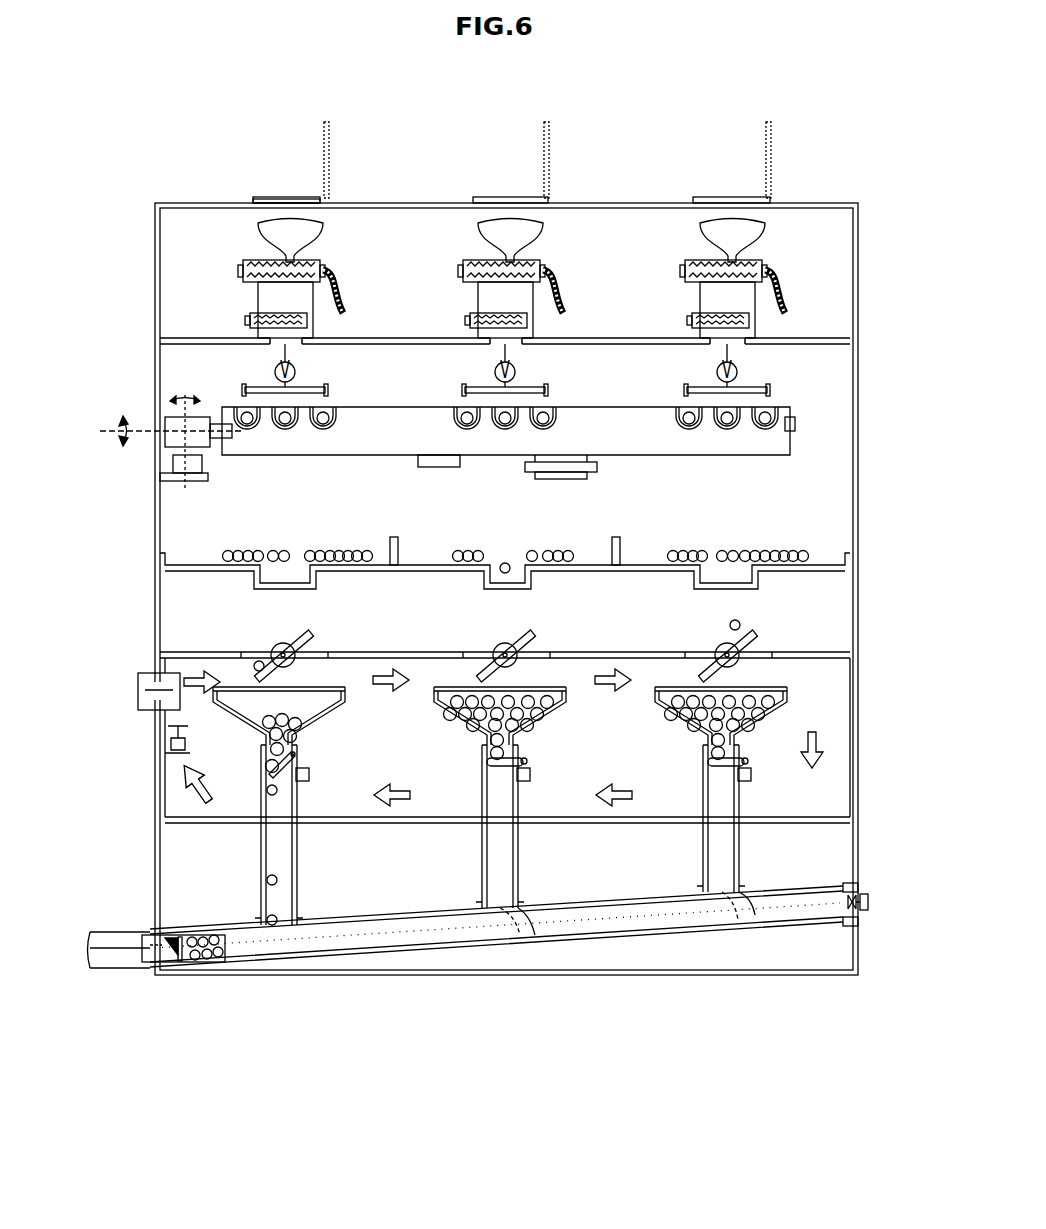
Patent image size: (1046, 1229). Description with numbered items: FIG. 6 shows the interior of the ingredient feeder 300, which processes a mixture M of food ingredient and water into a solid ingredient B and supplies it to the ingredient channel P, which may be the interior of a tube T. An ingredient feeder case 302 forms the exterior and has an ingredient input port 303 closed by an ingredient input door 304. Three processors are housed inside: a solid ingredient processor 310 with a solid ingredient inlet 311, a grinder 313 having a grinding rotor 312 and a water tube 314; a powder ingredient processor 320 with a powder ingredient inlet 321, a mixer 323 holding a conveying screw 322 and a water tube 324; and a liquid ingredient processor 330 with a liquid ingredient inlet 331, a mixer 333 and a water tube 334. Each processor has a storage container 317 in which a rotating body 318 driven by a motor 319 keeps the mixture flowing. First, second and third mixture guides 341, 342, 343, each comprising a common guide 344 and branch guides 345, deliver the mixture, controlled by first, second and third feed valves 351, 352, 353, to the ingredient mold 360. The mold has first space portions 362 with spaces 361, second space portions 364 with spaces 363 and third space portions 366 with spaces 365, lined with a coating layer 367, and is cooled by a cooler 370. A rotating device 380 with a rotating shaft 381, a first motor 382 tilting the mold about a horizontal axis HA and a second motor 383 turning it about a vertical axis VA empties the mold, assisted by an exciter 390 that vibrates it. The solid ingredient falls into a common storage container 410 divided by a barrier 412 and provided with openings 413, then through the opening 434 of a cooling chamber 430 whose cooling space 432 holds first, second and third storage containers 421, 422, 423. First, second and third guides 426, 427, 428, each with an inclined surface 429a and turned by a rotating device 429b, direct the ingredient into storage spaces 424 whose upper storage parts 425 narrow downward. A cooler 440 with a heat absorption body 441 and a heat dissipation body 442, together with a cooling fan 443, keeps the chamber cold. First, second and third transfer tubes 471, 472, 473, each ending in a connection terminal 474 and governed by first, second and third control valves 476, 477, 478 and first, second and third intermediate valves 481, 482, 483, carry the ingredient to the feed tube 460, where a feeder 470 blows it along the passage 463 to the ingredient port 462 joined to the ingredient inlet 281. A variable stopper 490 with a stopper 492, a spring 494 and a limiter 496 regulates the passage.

The ingredient feeder 300 is at (136, 192).
The ingredient feeder case 302 is at (258, 300).
The ingredient input port 303 is at (304, 199).
The ingredient input door 304 is at (283, 197).
The solid ingredient processor 310 is at (488, 211).
The solid ingredient inlet 311 is at (274, 230).
The grinding rotor 312 is at (258, 266).
The grinder 313 is at (268, 295).
The water tube 314 is at (329, 197).
The storage container 317 is at (260, 290).
The rotating body 318 is at (252, 320).
The motor 319 is at (262, 325).
The powder ingredient processor 320 is at (514, 212).
The powder ingredient inlet 321 is at (497, 232).
The conveying screw 322 is at (485, 300).
The mixer 323 is at (540, 199).
The water tube 324 is at (545, 318).
The liquid ingredient processor 330 is at (793, 246).
The liquid ingredient inlet 331 is at (730, 232).
The mixer 333 is at (780, 250).
The water tube 334 is at (775, 282).
The first mixture guide 341 is at (198, 367).
The second mixture guide 342 is at (305, 390).
The third mixture guide 343 is at (760, 385).
The common guide 344 is at (272, 372).
The branch guides 345 is at (262, 389).
The first feed valve 351 is at (270, 340).
The second feed valve 352 is at (520, 372).
The third feed valve 353 is at (800, 345).
The ingredient mold 360 is at (562, 305).
The space 361 is at (322, 410).
The first space portion 362 is at (343, 410).
The space 363 is at (543, 410).
The second space portion 364 is at (565, 405).
The space 365 is at (768, 410).
The third space portion 366 is at (770, 440).
The coating layer 367 is at (795, 425).
The cooler 370 is at (700, 478).
The rotating device 380 is at (142, 455).
The rotating shaft 381 is at (200, 462).
The first motor 382 is at (200, 440).
The second motor 383 is at (215, 442).
The exciter 390 is at (190, 480).
The common storage container 410 is at (501, 738).
The barrier 412 is at (620, 540).
The opening 413 is at (740, 578).
The first storage container 421 is at (300, 750).
The second storage container 422 is at (540, 705).
The third storage container 423 is at (770, 720).
The storage space 424 is at (557, 861).
The upper storage part 425 is at (822, 745).
The first guide 426 is at (240, 655).
The second guide 427 is at (320, 660).
The third guide 428 is at (760, 640).
The inclined surface 429a is at (300, 640).
The rotating device 429b is at (268, 665).
The cooling chamber 430 is at (547, 741).
The cooling space 432 is at (815, 795).
The opening 434 is at (780, 655).
The cooler 440 is at (128, 702).
The heat absorption body 441 is at (165, 685).
The heat dissipation body 442 is at (158, 704).
The cooling fan 443 is at (168, 732).
The feed tube 460 is at (525, 966).
The ingredient port 462 is at (130, 962).
The passage 463 is at (440, 935).
The feeder 470 is at (883, 905).
The first transfer tube 471 is at (268, 925).
The second transfer tube 472 is at (515, 770).
The third transfer tube 473 is at (737, 845).
The connection terminal 474 is at (558, 901).
The first control valve 476 is at (290, 775).
The second control valve 477 is at (520, 800).
The third control valve 478 is at (770, 770).
The first intermediate valve 481 is at (302, 790).
The second intermediate valve 482 is at (500, 905).
The third intermediate valve 483 is at (718, 905).
The variable stopper 490 is at (172, 1025).
The stopper 492 is at (181, 950).
The spring 494 is at (170, 945).
The limiter 496 is at (205, 952).
The ingredient inlet 281 is at (133, 946).
The mixture M is at (246, 270).
The solid ingredient B is at (230, 556).
The ingredient channel P is at (97, 938).
The tube T is at (112, 940).
The horizontal axis HA is at (115, 430).
The vertical axis VA is at (170, 400).